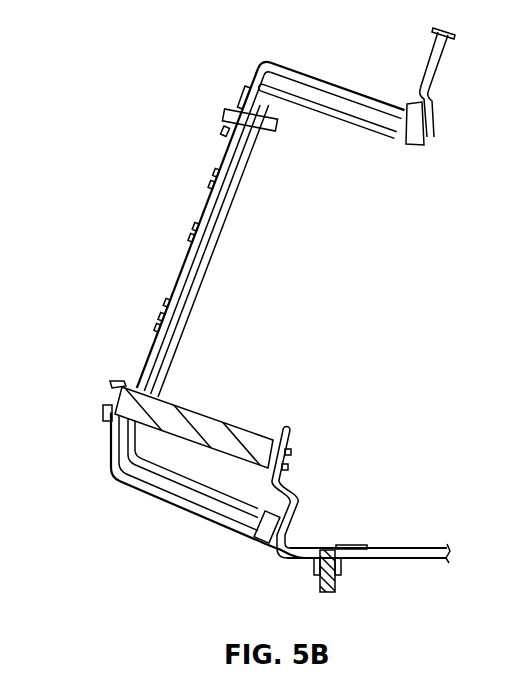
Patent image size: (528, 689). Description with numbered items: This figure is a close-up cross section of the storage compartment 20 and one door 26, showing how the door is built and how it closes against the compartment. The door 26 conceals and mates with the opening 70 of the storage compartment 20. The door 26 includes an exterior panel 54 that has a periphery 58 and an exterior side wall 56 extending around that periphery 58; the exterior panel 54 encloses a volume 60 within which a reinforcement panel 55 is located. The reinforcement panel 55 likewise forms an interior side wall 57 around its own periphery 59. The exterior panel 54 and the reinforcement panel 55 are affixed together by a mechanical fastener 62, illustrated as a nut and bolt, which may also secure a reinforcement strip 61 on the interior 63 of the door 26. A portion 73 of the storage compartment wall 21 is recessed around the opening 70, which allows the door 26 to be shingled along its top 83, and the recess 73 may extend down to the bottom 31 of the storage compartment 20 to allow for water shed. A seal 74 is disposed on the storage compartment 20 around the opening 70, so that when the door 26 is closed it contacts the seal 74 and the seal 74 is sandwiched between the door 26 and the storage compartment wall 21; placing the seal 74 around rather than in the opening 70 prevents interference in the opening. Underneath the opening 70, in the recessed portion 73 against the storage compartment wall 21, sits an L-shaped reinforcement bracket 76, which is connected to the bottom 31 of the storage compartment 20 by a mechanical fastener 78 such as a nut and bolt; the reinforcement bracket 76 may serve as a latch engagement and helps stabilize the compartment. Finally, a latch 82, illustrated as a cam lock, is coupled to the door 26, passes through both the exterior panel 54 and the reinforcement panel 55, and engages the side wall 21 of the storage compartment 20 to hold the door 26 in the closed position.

The storage compartment 20 is at (452, 40).
The storage compartment wall 21 is at (433, 95).
The door 26 is at (84, 404).
The bottom 31 is at (288, 562).
The exterior panel 54 is at (180, 290).
The reinforcement panel 55 is at (203, 282).
The exterior side wall 56 is at (294, 70).
The interior side wall 57 is at (368, 130).
The periphery 58 is at (262, 66).
The periphery 59 is at (270, 100).
The volume 60 is at (235, 236).
The reinforcement strip 61 is at (254, 142).
The mechanical fastener 62 is at (228, 102).
The interior 63 is at (216, 242).
The opening 70 is at (455, 109).
The recessed portion 73 is at (428, 140).
The seal 74 is at (257, 530).
The reinforcement bracket 76 is at (358, 548).
The mechanical fastener 78 is at (339, 572).
The latch 82 is at (193, 427).
The top 83 is at (347, 92).